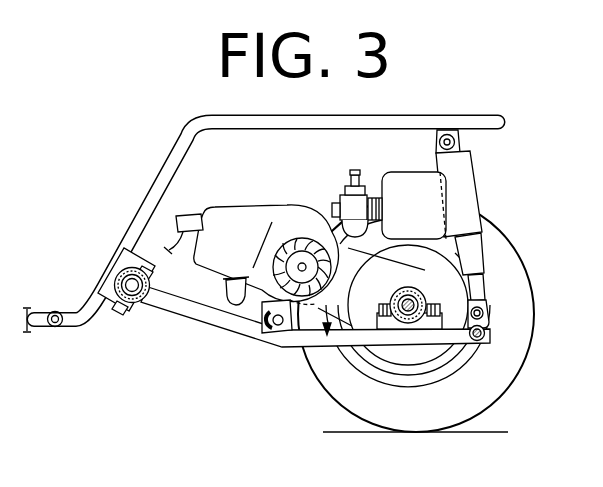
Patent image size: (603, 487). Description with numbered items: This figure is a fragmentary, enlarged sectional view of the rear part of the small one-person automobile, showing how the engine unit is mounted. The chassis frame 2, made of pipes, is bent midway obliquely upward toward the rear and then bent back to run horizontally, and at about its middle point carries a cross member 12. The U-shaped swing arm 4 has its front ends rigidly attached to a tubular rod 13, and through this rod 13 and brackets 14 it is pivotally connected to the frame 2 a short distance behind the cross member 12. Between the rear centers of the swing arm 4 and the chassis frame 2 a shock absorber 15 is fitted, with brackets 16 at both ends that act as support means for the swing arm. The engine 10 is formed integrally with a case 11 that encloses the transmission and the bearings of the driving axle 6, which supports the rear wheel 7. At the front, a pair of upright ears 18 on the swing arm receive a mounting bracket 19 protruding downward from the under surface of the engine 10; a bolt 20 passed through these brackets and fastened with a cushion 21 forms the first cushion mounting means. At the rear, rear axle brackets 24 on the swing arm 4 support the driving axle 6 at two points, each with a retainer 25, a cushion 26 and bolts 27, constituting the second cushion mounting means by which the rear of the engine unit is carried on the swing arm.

The chassis frame 2 is at (170, 157).
The swing arm 4 is at (180, 305).
The driving axle 6 is at (415, 330).
The rear wheel 7 is at (506, 238).
The engine 10 is at (292, 205).
The case 11 is at (327, 335).
The cross member 12 is at (50, 331).
The rod 13 is at (118, 268).
The bracket 14 is at (116, 300).
The shock absorber 15 is at (467, 178).
The bracket 16 is at (490, 322).
The upright ear or bracket 18 is at (278, 326).
The mounting bracket 19 is at (272, 310).
The bolt 20 is at (271, 324).
The cushion 21 is at (310, 303).
The rear axle bracket 24 is at (417, 330).
The retainer 25 is at (387, 335).
The cushion 26 is at (419, 291).
The bolt 27 is at (380, 303).